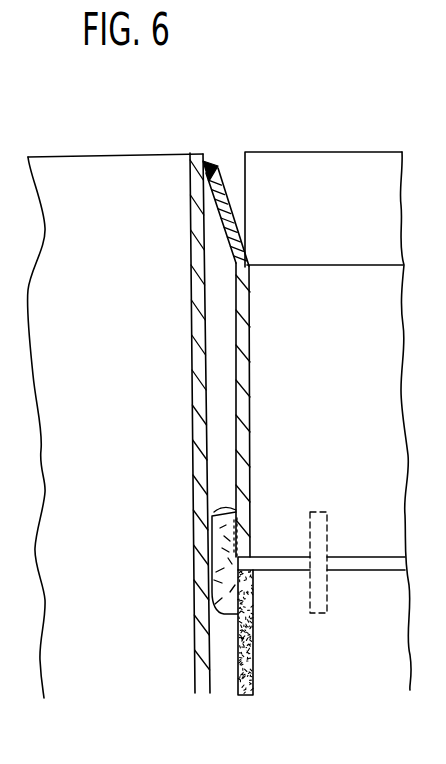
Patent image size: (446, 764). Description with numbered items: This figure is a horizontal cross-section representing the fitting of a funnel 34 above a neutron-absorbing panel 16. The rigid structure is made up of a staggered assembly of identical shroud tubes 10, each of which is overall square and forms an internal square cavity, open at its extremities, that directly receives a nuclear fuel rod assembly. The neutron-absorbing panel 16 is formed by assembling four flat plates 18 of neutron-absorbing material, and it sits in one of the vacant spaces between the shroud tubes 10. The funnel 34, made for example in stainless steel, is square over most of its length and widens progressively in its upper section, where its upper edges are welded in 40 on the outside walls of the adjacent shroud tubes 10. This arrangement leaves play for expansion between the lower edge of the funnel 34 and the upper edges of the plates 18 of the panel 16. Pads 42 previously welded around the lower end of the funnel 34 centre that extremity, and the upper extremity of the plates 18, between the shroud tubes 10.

The shroud tube 10 is at (97, 153).
The neutron-absorbing panel 16 is at (237, 678).
The flat plate 18 is at (255, 650).
The funnel 34 is at (229, 213).
The weld 40 is at (209, 167).
The pad 42 is at (213, 514).